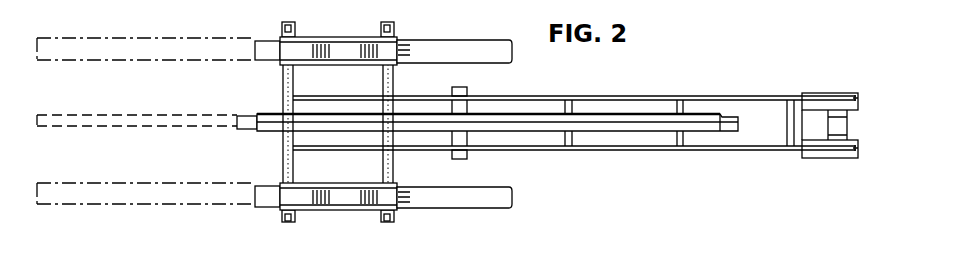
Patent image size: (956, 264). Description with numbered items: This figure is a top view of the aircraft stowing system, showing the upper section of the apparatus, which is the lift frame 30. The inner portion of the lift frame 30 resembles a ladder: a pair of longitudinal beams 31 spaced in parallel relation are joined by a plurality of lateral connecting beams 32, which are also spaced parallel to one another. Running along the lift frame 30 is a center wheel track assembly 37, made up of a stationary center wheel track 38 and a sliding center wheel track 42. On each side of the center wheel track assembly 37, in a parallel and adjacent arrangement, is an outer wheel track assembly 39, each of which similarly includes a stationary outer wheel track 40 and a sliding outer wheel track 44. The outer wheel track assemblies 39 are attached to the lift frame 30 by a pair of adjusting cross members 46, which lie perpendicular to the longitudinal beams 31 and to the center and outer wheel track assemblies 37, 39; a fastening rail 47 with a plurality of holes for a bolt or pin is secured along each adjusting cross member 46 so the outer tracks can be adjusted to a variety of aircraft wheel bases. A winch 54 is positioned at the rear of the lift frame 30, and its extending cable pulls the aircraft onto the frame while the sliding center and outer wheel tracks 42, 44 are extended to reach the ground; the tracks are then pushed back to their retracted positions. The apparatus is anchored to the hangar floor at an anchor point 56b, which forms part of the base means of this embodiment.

The lift frame 30 is at (596, 90).
The longitudinal beams 31 is at (656, 97).
The lateral connecting beams 32 is at (463, 107).
The center wheel track assembly 37 is at (272, 102).
The stationary center wheel track 38 is at (736, 128).
The outer wheel track assemblies 39 is at (338, 130).
The stationary outer wheel track 40 is at (291, 50).
The sliding center wheel track 42 is at (135, 116).
The sliding outer wheel track 44 is at (185, 42).
The adjusting cross members 46 is at (283, 84).
The fastening rail 47 is at (395, 68).
The winch 54 is at (842, 125).
The anchor point 56b is at (853, 152).